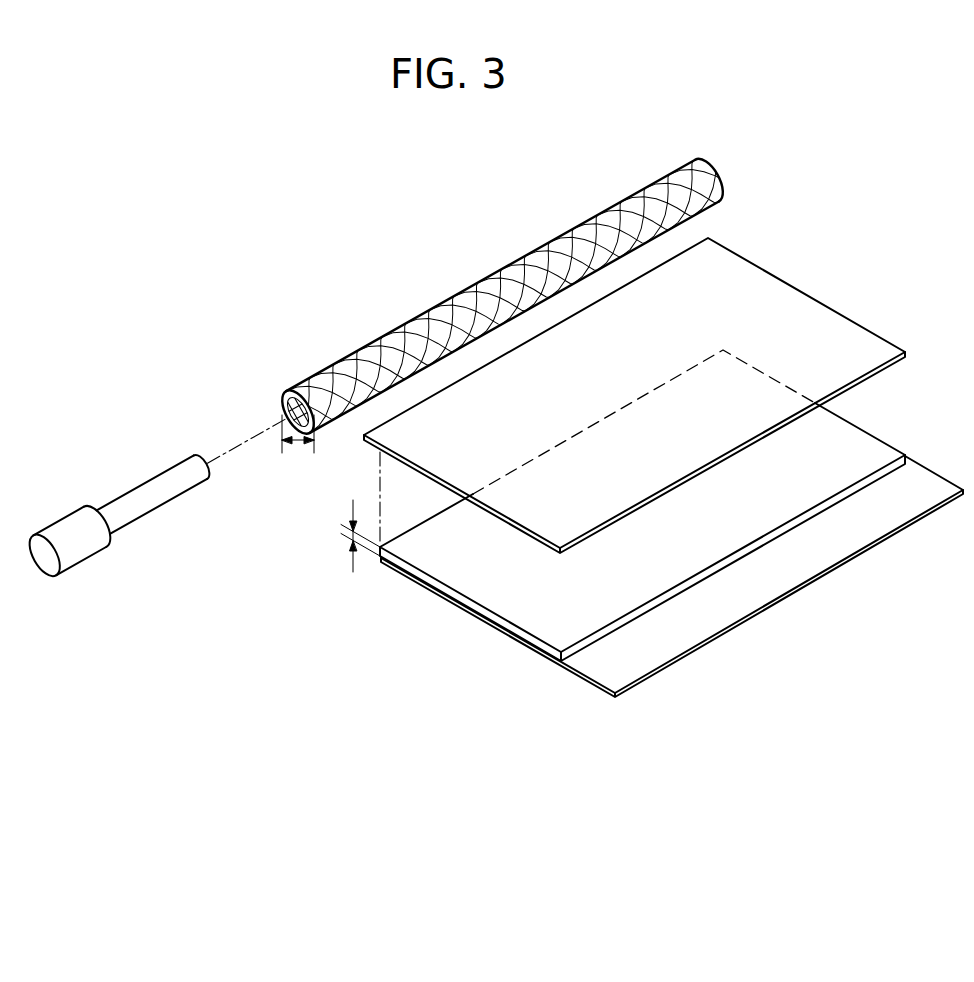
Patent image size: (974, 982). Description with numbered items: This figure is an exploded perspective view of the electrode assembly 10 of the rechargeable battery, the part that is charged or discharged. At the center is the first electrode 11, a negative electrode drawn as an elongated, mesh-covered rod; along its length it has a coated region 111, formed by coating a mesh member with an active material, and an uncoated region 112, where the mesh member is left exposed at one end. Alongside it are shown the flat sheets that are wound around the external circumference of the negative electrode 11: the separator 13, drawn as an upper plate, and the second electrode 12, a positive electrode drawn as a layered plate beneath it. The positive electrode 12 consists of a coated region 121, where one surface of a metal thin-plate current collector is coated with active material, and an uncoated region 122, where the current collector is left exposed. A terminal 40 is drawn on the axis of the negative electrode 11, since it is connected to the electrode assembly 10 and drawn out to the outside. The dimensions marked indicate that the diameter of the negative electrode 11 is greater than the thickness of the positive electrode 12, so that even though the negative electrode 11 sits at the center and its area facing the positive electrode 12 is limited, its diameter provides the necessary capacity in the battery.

The electrode assembly 10 is at (392, 158).
The first electrode (negative electrode) 11 is at (455, 209).
The coated region 111 is at (698, 162).
The uncoated region 112 is at (296, 379).
The second electrode (positive electrode) 12 is at (352, 600).
The coated region 121 is at (453, 563).
The uncoated region 122 is at (597, 659).
The separator 13 is at (750, 285).
The terminal 40 is at (77, 548).